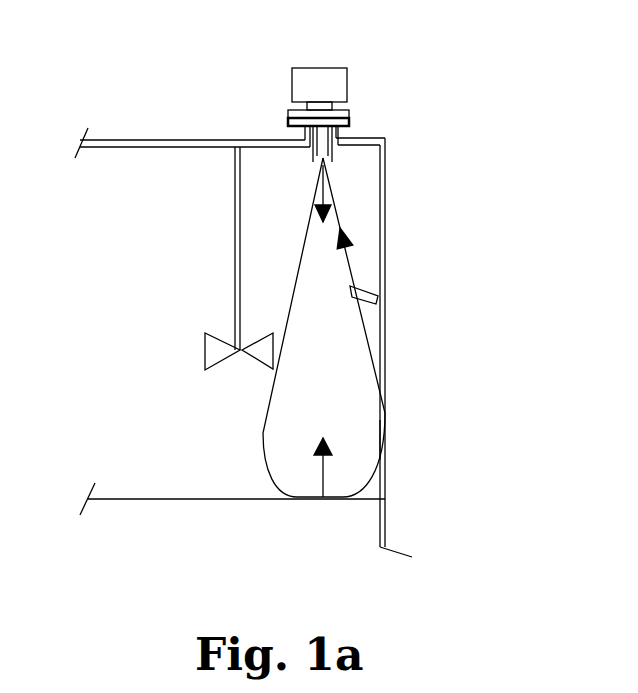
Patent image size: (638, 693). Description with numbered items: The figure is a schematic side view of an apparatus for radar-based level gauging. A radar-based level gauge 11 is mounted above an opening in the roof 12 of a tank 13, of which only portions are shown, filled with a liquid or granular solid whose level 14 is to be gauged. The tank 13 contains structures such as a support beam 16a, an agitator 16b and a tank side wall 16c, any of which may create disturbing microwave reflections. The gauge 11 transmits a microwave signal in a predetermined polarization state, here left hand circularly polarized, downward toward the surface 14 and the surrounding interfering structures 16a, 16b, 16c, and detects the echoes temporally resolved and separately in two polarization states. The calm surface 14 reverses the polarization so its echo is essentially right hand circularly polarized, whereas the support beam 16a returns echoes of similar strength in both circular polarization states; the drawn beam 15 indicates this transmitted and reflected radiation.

The radar-based level gauge 11 is at (365, 77).
The roof 12 is at (128, 142).
The tank 13 is at (403, 142).
The level 14 is at (160, 499).
The radiation beam 15 is at (370, 342).
The support beam 16a is at (380, 287).
The agitator 16b is at (205, 348).
The tank side wall 16c is at (385, 440).